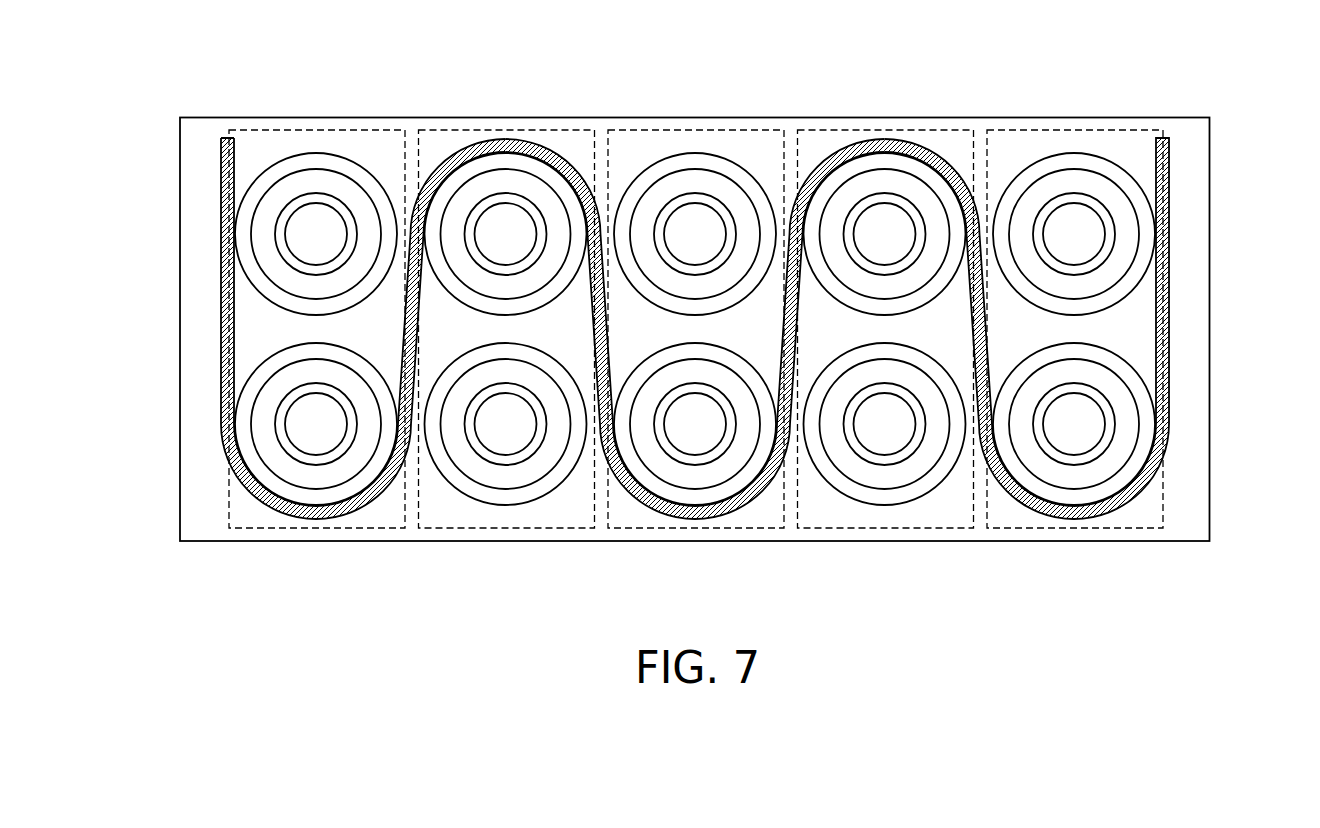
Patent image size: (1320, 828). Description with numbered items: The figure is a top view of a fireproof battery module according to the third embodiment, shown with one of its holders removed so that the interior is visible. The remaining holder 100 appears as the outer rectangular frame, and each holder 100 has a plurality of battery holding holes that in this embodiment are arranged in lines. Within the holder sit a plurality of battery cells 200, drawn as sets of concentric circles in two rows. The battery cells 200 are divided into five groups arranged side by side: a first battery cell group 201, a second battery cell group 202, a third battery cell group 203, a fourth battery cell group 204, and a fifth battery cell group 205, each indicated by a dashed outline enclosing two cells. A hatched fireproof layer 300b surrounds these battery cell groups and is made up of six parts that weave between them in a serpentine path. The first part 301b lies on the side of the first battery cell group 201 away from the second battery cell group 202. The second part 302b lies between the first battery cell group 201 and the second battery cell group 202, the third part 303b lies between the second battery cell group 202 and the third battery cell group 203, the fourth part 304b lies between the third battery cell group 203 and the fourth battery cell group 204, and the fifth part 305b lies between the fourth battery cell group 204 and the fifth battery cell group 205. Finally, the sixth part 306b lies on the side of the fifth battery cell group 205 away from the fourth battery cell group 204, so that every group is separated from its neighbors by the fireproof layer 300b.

The holder 100 is at (1190, 160).
The battery cell 200 is at (1074, 232).
The first battery cell group 201 is at (322, 130).
The second battery cell group 202 is at (510, 130).
The third battery cell group 203 is at (701, 130).
The fourth battery cell group 204 is at (889, 130).
The fifth battery cell group 205 is at (1058, 130).
The fireproof layer 300b is at (700, 368).
The first part 301b is at (223, 359).
The second part 302b is at (408, 388).
The third part 303b is at (603, 392).
The fourth part 304b is at (787, 388).
The fifth part 305b is at (981, 393).
The sixth part 306b is at (1168, 348).